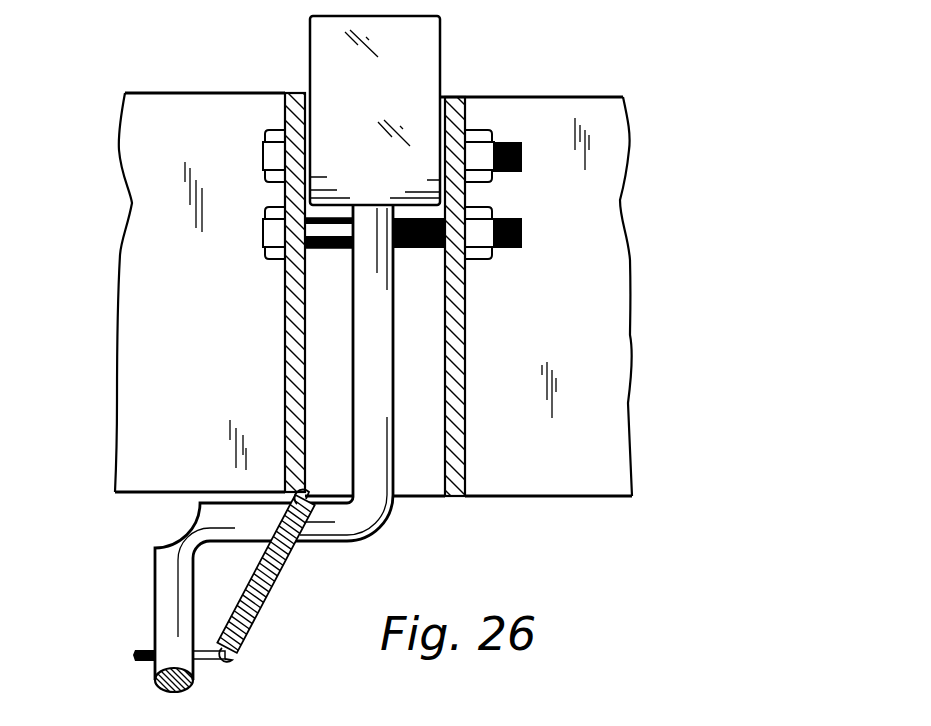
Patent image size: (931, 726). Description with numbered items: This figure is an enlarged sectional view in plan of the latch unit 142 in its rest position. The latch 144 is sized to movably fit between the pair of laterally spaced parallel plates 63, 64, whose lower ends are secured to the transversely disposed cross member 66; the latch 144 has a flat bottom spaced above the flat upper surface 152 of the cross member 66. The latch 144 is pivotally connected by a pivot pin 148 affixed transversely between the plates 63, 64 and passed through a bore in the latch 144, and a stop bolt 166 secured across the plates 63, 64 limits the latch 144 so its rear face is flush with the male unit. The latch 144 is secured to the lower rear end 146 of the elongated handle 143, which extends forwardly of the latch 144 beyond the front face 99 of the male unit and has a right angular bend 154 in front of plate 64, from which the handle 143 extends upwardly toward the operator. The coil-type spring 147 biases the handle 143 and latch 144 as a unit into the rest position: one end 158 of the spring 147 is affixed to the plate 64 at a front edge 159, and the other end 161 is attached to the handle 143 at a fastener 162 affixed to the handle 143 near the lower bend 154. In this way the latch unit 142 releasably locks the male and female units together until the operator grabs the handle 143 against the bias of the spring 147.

The latch unit 142 is at (125, 523).
The handle 143 is at (163, 684).
The latch 144 is at (338, 118).
The lower rear end 146 is at (372, 341).
The spring 147 is at (258, 578).
The pivot pin 148 is at (523, 167).
The flat upper surface 152 is at (231, 139).
The right angular bend 154 is at (243, 532).
The spring end 158 is at (319, 489).
The front edge 159 is at (383, 509).
The spring other end 161 is at (234, 659).
The fastener 162 is at (208, 662).
The stop bolt 166 is at (523, 237).
The plate 63 is at (285, 300).
The plate 64 is at (457, 349).
The cross member 66 is at (605, 300).
The front face 99 is at (531, 497).